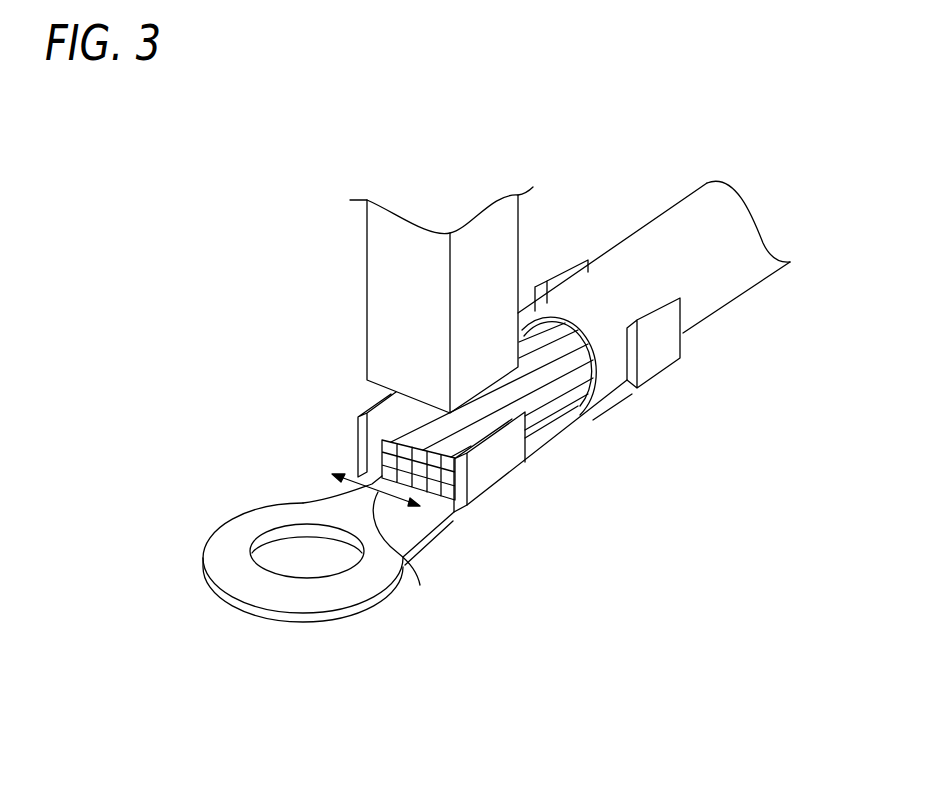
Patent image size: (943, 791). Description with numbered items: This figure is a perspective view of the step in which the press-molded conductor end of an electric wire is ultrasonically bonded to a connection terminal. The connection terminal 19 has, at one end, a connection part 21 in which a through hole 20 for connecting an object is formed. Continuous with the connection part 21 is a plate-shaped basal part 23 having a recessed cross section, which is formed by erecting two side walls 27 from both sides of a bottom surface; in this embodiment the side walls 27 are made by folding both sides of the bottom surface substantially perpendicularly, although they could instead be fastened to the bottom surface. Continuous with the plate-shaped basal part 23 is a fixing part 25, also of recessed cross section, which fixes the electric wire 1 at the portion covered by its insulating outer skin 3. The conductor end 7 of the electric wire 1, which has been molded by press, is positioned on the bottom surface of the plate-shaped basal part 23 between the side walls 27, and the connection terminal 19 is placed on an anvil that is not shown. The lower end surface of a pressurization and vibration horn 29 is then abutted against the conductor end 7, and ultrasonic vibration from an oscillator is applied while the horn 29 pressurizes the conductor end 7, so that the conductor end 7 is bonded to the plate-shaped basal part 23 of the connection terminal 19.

The electric wire 1 is at (621, 180).
The insulating outer skin 3 is at (730, 280).
The conductor end 7 is at (558, 420).
The connection terminal 19 is at (376, 636).
The through hole 20 is at (257, 542).
The connection part 21 is at (278, 620).
The plate-shaped basal part 23 is at (493, 505).
The fixing part 25 is at (667, 367).
The side walls 27 is at (357, 427).
The pressurization and vibration horn 29 is at (367, 273).